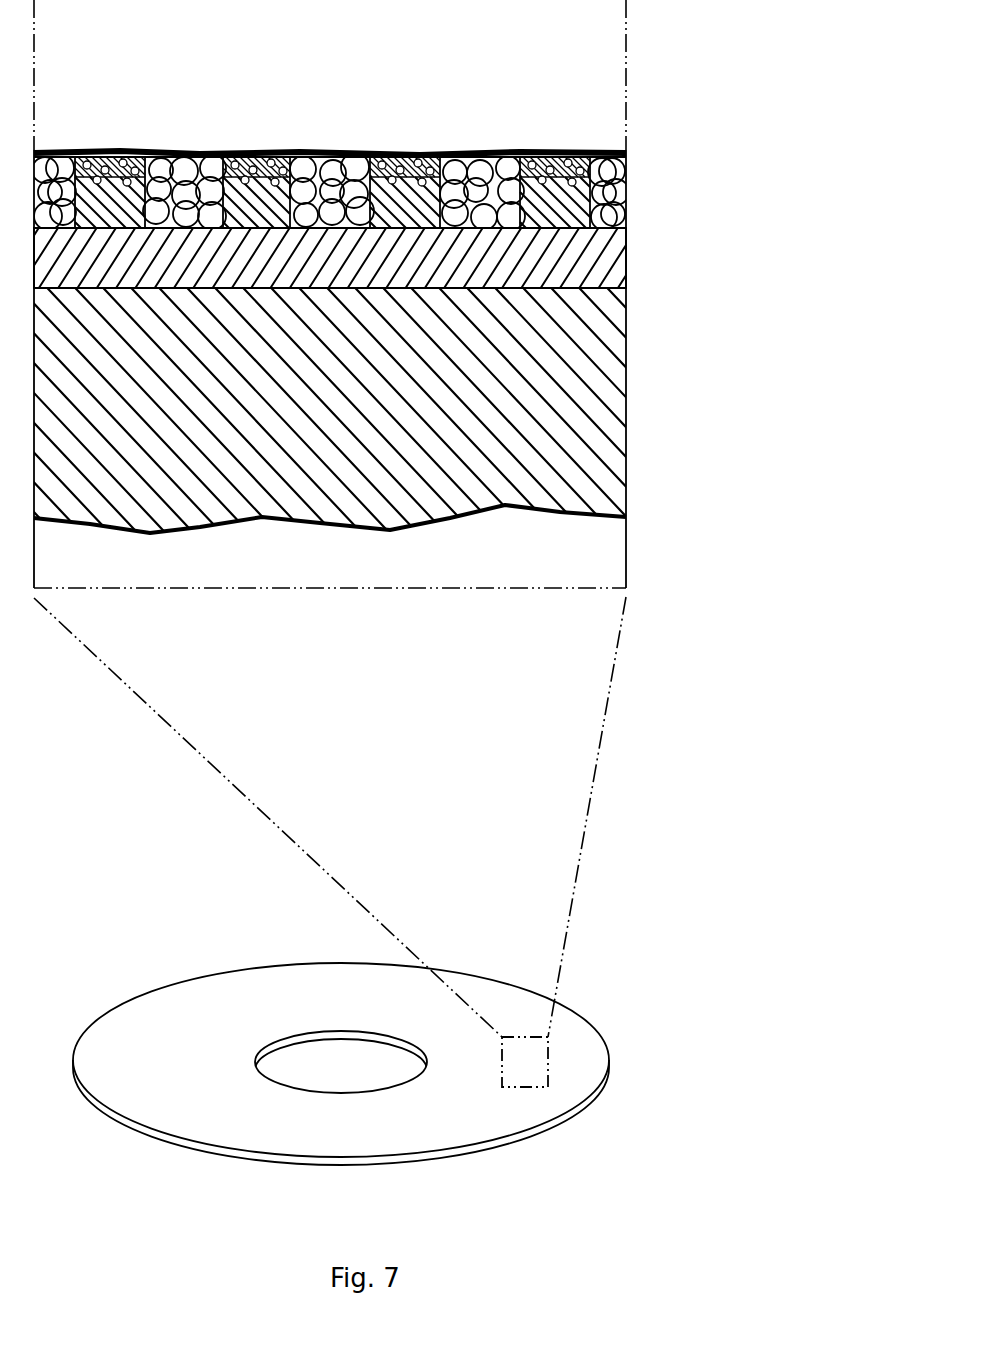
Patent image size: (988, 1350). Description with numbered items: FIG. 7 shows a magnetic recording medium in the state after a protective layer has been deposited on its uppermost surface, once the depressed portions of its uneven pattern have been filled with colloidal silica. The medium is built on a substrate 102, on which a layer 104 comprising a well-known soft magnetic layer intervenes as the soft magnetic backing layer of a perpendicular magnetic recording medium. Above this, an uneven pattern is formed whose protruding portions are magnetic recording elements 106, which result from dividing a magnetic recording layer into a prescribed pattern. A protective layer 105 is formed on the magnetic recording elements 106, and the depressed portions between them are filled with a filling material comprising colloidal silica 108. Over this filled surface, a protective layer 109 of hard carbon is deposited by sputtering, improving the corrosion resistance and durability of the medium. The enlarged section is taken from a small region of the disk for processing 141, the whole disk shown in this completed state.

The substrate 102 is at (603, 420).
The layer comprising a soft magnetic layer 104 is at (603, 258).
The protective layer 105 is at (87, 152).
The magnetic recording elements 106 is at (139, 152).
The colloidal silica 108 is at (192, 152).
The protective layer 109 is at (598, 152).
The disk for processing 141 is at (475, 1127).